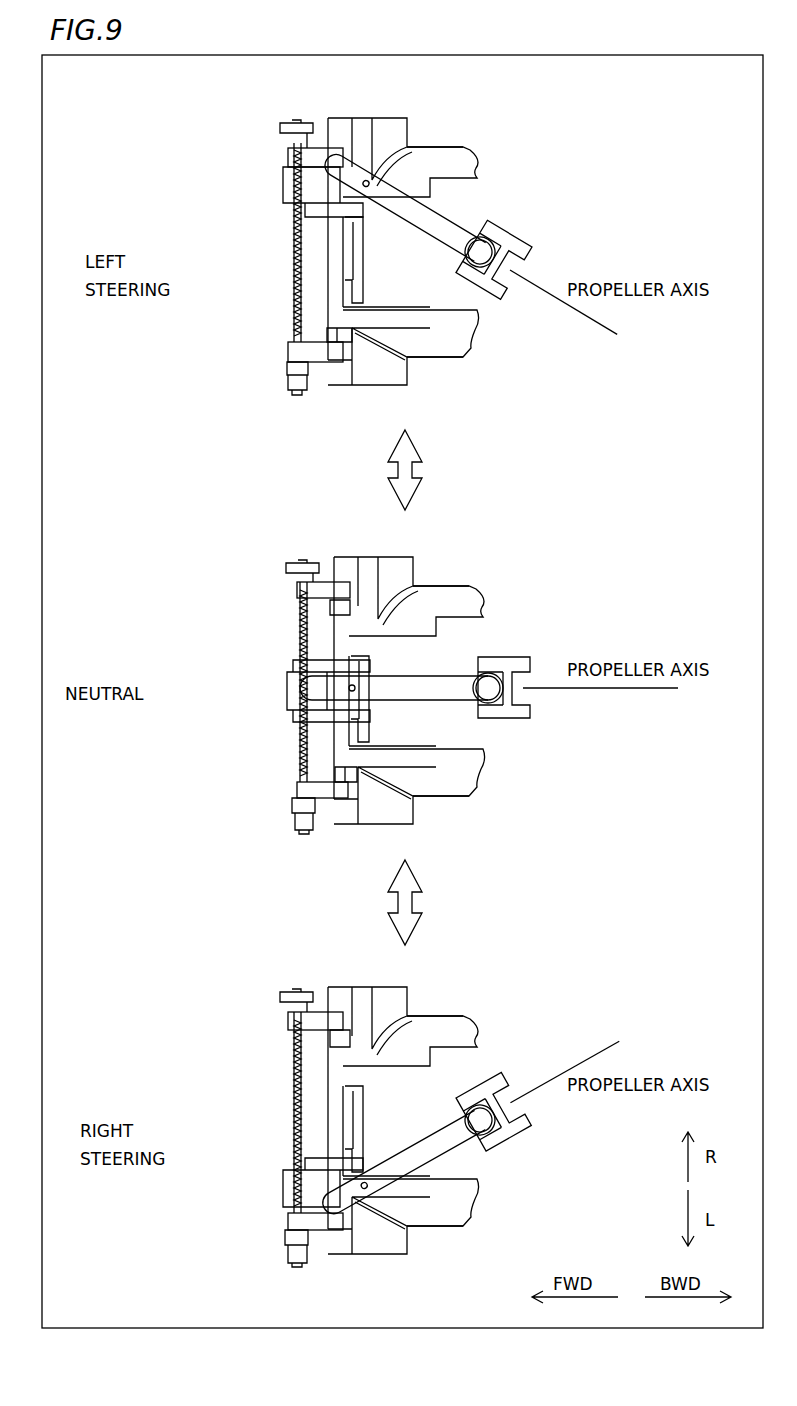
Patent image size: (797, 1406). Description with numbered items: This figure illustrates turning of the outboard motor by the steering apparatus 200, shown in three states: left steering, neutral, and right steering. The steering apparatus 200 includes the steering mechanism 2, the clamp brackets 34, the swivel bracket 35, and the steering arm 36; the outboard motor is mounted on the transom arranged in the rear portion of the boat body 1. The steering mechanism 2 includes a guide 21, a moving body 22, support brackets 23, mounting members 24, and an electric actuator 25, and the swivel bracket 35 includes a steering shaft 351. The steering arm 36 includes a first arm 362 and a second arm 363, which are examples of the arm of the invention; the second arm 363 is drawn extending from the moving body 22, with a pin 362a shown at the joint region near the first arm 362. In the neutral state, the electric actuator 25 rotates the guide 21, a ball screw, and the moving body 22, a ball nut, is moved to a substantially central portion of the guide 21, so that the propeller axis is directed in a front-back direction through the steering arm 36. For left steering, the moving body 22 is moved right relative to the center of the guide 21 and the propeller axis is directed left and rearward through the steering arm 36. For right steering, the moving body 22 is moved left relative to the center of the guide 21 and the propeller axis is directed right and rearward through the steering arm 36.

The steering apparatus 200 is at (195, 122).
The steering mechanism 2 is at (207, 161).
The boat body 1 is at (397, 373).
The guide 21 is at (294, 260).
The moving body 22 is at (285, 187).
The support brackets 23 is at (290, 155).
The mounting members 24 is at (330, 335).
The electric actuator 25 is at (287, 380).
The clamp brackets 34 is at (455, 153).
The swivel bracket 35 is at (467, 303).
The steering shaft 351 is at (487, 242).
The steering arm 36 is at (433, 225).
The first arm 362 is at (412, 207).
The link pin 362a is at (366, 184).
The second arm 363 is at (318, 160).